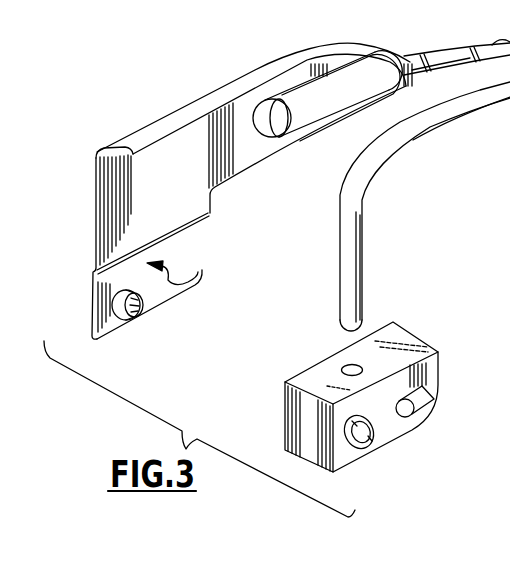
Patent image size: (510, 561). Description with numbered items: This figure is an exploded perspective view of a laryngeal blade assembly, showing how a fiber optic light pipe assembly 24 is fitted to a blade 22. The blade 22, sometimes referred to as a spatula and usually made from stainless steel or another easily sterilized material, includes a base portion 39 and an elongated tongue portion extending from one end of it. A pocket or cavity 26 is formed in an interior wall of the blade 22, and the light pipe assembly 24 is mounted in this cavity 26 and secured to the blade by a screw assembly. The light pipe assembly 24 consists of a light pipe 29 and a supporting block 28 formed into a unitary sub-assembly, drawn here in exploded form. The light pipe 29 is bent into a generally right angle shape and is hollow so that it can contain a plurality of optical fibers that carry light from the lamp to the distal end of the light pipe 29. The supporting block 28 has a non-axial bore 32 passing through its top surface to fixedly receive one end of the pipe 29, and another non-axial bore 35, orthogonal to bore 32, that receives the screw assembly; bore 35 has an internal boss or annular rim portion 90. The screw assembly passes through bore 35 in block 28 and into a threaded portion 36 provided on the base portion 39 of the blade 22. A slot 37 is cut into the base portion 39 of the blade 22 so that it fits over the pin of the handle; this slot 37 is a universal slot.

The blade 22 is at (133, 182).
The fiber optic light pipe assembly 24 is at (364, 295).
The pocket or cavity 26 is at (355, 81).
The supporting block 28 is at (331, 394).
The light pipe 29 is at (355, 213).
The non-axial bore 32 is at (356, 364).
The non-axial bore 35 is at (357, 450).
The threaded portion 36 is at (115, 303).
The slot 37 is at (196, 254).
The base portion 39 is at (198, 272).
The internal boss or annular rim portion 90 is at (371, 433).